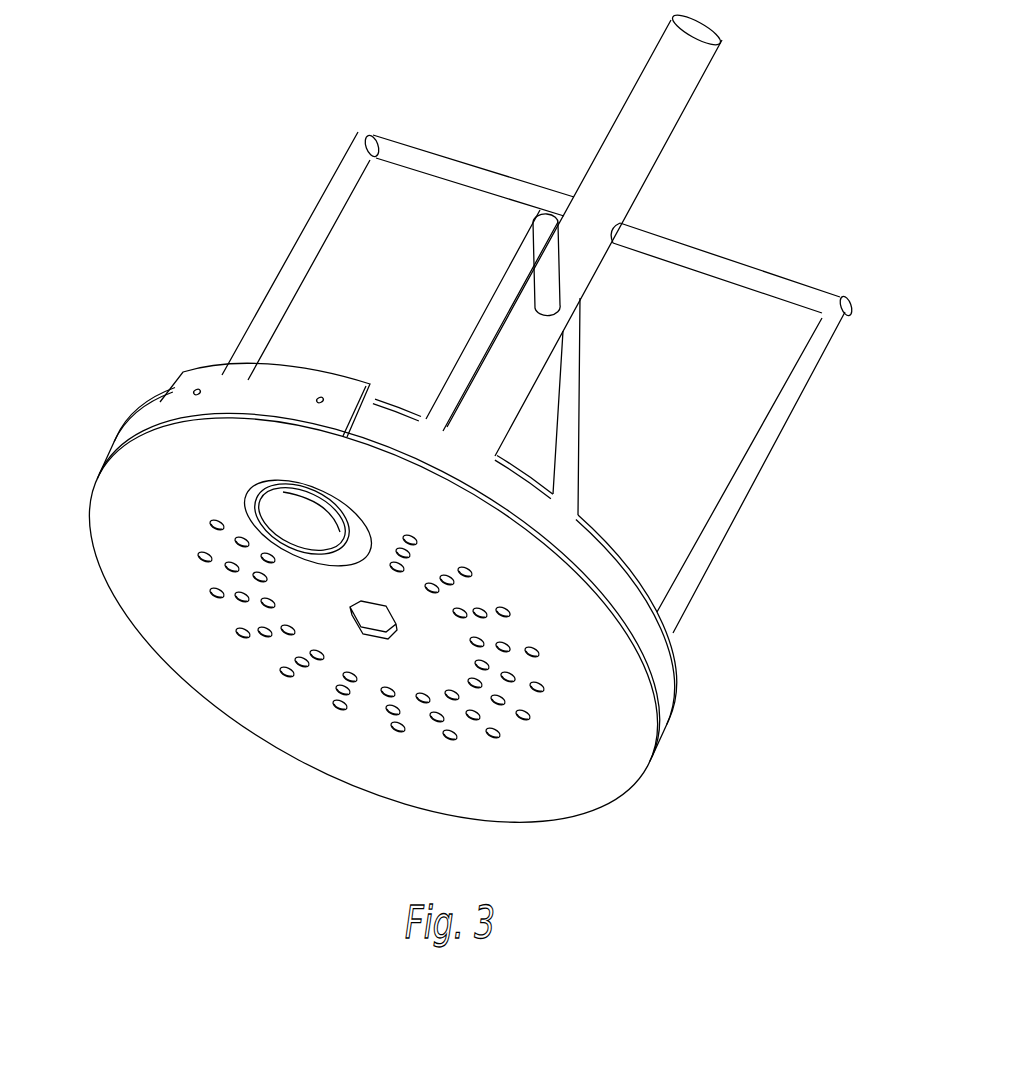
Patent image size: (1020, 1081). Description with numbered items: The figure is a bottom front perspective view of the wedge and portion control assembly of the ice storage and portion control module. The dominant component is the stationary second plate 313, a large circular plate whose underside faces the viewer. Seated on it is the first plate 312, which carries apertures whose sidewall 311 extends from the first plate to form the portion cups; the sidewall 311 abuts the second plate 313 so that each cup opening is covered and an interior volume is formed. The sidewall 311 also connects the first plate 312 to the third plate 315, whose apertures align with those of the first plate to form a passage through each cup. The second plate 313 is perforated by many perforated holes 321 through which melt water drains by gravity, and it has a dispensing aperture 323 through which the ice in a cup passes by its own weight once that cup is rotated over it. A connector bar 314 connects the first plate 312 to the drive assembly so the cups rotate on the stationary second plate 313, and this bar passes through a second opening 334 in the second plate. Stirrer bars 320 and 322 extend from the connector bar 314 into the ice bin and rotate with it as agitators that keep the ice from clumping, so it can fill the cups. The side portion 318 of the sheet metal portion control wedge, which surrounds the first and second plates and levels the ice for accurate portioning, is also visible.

The sidewall 311 is at (275, 548).
The first plate 312 is at (610, 540).
The second plate 313 is at (178, 538).
The connector bar 314 is at (663, 107).
The third plate 315 is at (262, 495).
The side portion 318 is at (242, 392).
The stirrer bar 320 is at (807, 368).
The perforated holes 321 is at (243, 633).
The stirrer bar 322 is at (483, 333).
The dispensing aperture 323 is at (278, 518).
The second opening 334 is at (377, 625).